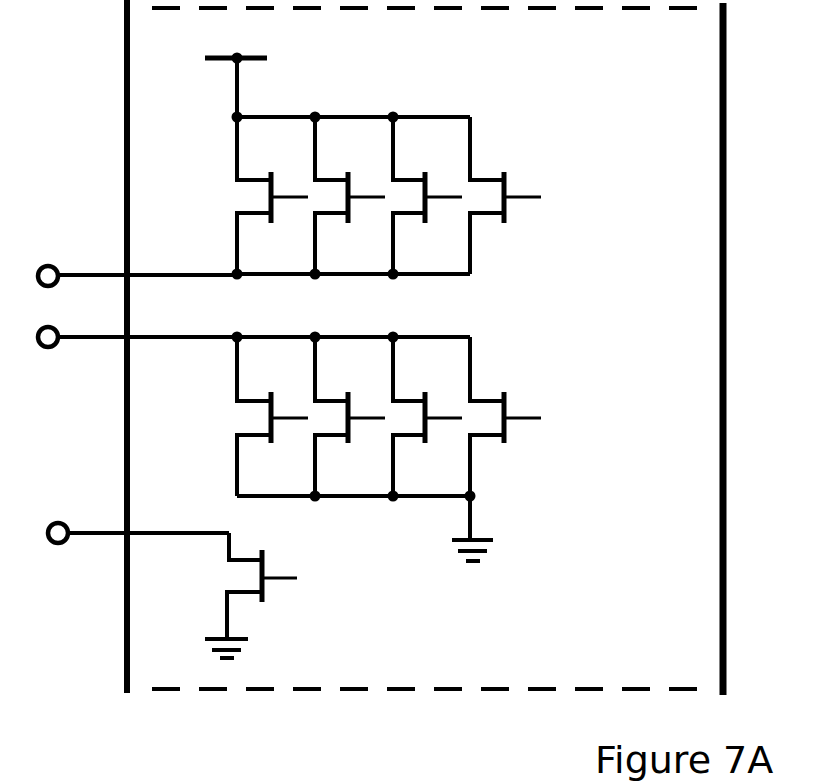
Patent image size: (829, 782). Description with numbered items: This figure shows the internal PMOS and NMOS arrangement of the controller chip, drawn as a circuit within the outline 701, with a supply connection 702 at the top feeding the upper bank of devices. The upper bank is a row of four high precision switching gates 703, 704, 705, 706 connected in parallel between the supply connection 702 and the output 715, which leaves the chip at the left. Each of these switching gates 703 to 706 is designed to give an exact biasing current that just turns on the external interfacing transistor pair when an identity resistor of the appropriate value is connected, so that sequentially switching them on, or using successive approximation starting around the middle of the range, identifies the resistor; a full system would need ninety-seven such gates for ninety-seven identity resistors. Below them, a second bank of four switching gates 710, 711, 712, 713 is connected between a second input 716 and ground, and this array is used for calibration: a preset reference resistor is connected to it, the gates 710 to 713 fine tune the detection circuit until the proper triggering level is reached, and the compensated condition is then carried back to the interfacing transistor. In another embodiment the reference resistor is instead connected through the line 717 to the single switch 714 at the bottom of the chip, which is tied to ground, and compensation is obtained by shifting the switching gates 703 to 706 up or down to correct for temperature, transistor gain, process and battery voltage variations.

The integrated circuit cell 701 is at (660, 190).
The supply voltage terminal 702 is at (220, 56).
The switching gate 703 is at (508, 187).
The switching gate 704 is at (431, 186).
The switching gate 705 is at (355, 188).
The switching gate 706 is at (279, 186).
The switching gate 710 is at (508, 408).
The switching gate 711 is at (430, 430).
The switching gate 712 is at (352, 430).
The switching gate 713 is at (272, 422).
The switch 714 is at (297, 582).
The output 715 is at (65, 272).
The input terminal 716 is at (80, 340).
The line 717 is at (93, 531).